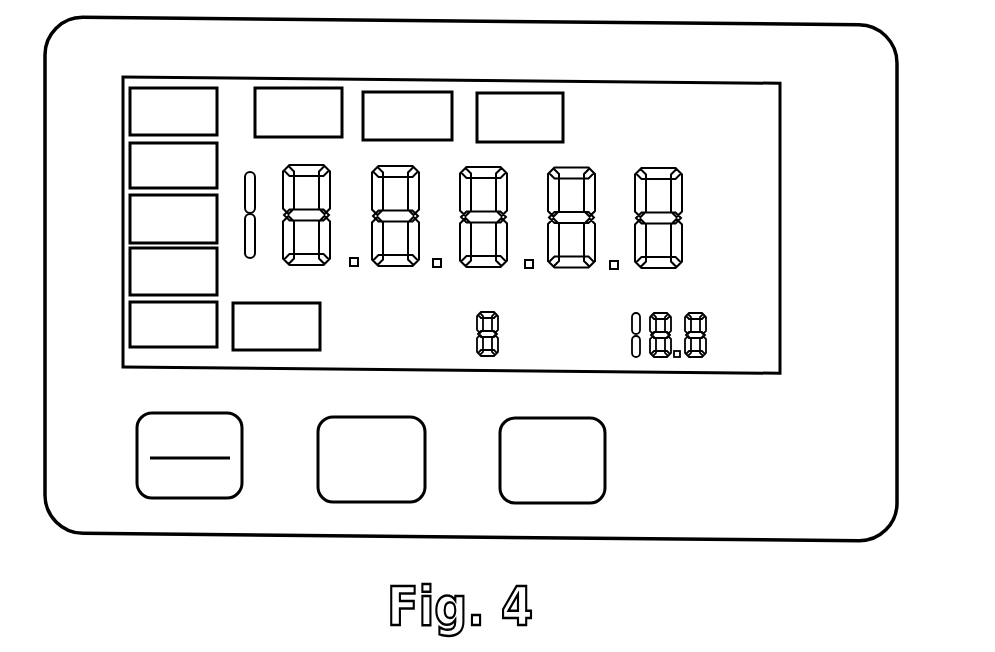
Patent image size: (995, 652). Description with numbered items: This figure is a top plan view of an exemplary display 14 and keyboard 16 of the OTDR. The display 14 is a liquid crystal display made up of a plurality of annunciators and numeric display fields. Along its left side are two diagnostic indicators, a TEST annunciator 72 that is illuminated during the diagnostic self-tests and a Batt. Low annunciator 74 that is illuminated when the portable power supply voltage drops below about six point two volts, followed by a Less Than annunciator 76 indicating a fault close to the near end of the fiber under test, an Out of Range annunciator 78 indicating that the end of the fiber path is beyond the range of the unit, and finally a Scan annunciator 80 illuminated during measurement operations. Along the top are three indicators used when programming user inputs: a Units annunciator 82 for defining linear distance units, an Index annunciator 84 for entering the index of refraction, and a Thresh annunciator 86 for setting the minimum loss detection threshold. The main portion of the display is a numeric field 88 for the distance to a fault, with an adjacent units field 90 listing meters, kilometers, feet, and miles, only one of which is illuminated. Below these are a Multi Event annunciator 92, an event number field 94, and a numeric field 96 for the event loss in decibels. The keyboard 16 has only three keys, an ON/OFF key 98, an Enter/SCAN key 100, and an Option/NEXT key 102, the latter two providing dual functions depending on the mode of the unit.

The display 14 is at (782, 125).
The keyboard 16 is at (397, 457).
The TEST annunciator 72 is at (143, 88).
The Batt. Low annunciator 74 is at (123, 149).
The Less Than annunciator 76 is at (123, 207).
The Out of Range annunciator 78 is at (123, 263).
The Scan annunciator 80 is at (123, 319).
The Units annunciator 82 is at (300, 88).
The Index annunciator 84 is at (413, 92).
The Thresh annunciator 86 is at (527, 93).
The numeric field 88 is at (645, 138).
The units field 90 is at (785, 216).
The Multi Event annunciator 92 is at (292, 350).
The event number field 94 is at (449, 307).
The numeric field for event loss 96 is at (694, 380).
The ON/OFF key 98 is at (137, 440).
The Enter/SCAN key 100 is at (320, 450).
The Option/NEXT key 102 is at (500, 447).